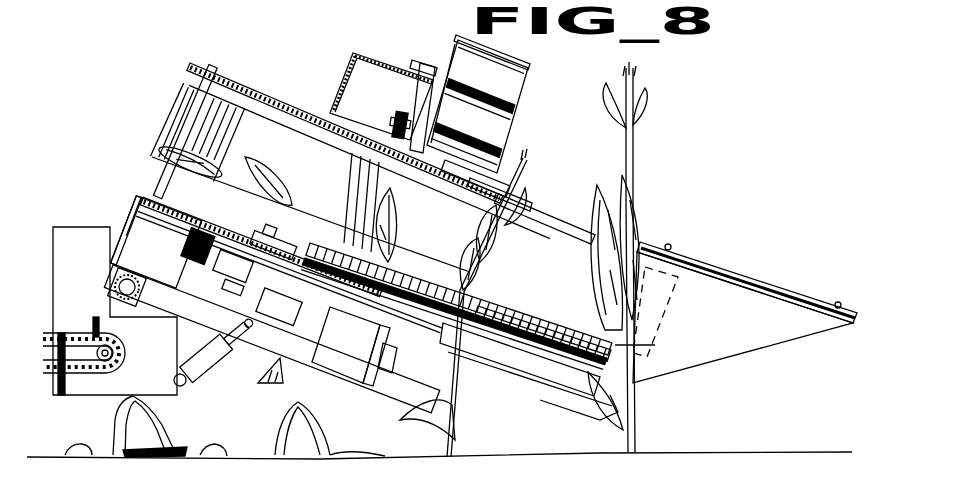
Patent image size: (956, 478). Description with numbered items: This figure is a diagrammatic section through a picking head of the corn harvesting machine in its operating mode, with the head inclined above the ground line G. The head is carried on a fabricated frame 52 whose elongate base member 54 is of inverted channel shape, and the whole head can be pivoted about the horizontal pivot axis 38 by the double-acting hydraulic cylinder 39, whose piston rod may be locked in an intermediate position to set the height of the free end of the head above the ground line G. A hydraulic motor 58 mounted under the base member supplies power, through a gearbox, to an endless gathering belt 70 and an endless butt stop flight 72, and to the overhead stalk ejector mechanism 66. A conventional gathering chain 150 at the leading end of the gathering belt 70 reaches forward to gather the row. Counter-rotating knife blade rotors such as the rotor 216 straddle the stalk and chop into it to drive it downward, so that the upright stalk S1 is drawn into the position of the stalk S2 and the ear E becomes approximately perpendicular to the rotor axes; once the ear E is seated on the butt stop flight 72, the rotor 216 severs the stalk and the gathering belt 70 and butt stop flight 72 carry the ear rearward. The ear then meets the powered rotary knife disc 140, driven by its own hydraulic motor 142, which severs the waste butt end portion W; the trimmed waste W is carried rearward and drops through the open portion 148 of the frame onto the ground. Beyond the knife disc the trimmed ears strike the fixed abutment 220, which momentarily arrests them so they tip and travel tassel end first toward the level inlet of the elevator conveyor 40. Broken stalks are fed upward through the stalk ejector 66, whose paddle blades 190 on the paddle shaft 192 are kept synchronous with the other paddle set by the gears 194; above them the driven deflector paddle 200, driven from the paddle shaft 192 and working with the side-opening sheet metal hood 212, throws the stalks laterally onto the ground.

The horizontal pivot axis 38 is at (133, 297).
The double-acting hydraulic cylinder 39 is at (196, 374).
The elevator conveyor 40 is at (62, 338).
The fabricated frame 52 is at (111, 298).
The elongate base member 54 is at (579, 418).
The hydraulic motor 58 is at (160, 214).
The overhead stalk ejector mechanism 66 is at (520, 190).
The endless gathering belt 70 is at (666, 312).
The endless butt stop flight 72 is at (651, 348).
The powered rotary knife disc 140 is at (392, 262).
The hydraulic motor 142 is at (358, 358).
The open portion of the picking head frame 148 is at (297, 229).
The gathering chain 150 is at (730, 263).
The paddle blades 190 is at (510, 178).
The paddle shaft 192 is at (393, 117).
The gears 194 is at (399, 106).
The driven deflector paddle 200 is at (510, 118).
The sheet metal hood 212 is at (525, 64).
The counter-rotating knife blade rotor 216 is at (526, 368).
The fixed abutment 220 is at (248, 224).
The ear E is at (260, 158).
The waste butt end portion W is at (270, 378).
The ground line G is at (710, 455).
The upright stalk S1 is at (634, 178).
The stalk position S2 is at (498, 248).